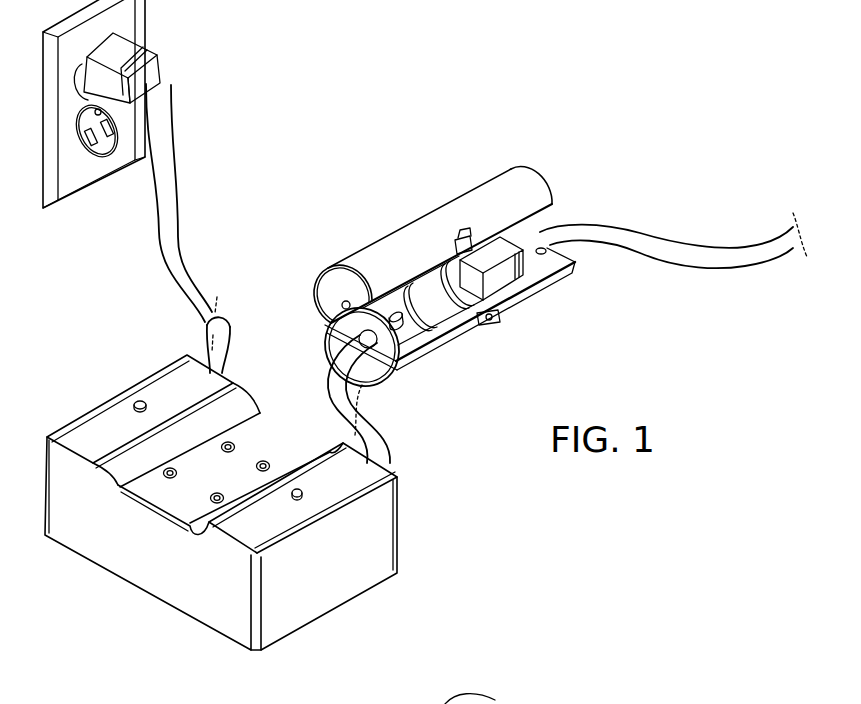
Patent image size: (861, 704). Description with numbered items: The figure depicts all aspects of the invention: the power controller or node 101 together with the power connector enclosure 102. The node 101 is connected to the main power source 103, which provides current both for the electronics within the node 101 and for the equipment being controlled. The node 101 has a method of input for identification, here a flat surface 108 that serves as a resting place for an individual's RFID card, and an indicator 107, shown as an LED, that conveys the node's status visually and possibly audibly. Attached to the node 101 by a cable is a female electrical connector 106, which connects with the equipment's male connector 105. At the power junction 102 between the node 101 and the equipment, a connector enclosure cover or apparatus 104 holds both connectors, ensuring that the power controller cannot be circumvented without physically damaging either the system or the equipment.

The power controller or node 101 is at (260, 521).
The power connector enclosure 102 is at (593, 170).
The main power source 103 is at (150, 57).
The connector enclosure cover or apparatus 104 is at (370, 240).
The male connector 105 is at (548, 282).
The female electrical connector 106 is at (443, 337).
The indicator 107 is at (137, 402).
The flat surface 108 is at (240, 460).